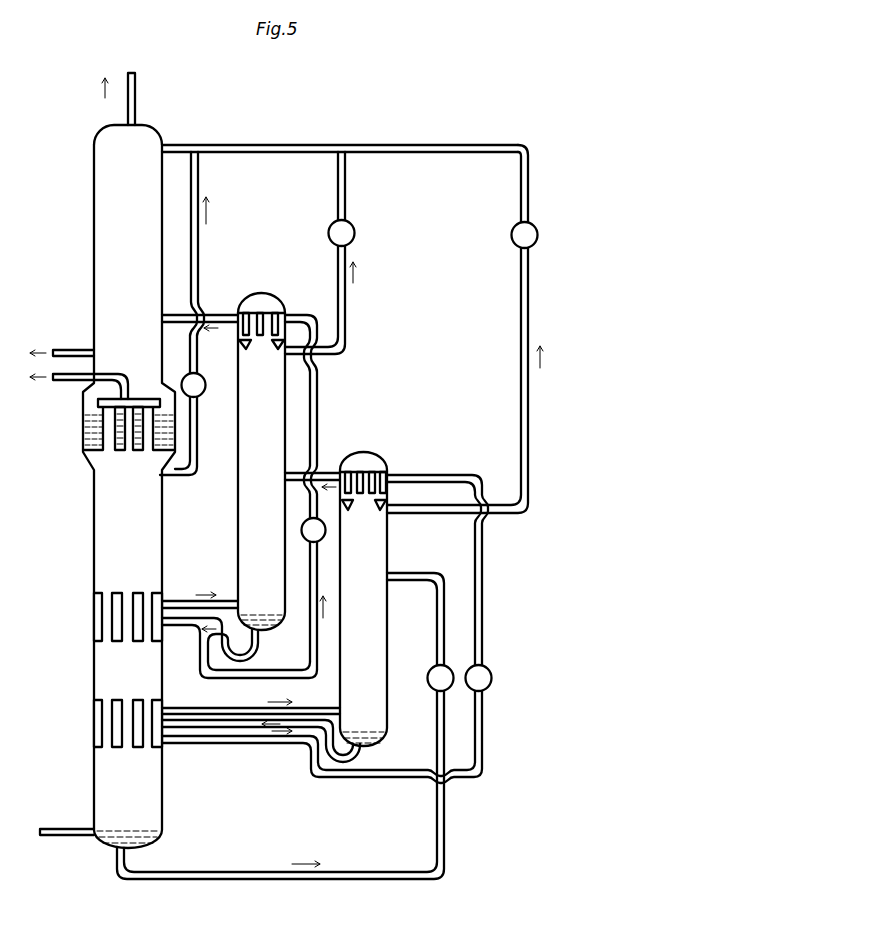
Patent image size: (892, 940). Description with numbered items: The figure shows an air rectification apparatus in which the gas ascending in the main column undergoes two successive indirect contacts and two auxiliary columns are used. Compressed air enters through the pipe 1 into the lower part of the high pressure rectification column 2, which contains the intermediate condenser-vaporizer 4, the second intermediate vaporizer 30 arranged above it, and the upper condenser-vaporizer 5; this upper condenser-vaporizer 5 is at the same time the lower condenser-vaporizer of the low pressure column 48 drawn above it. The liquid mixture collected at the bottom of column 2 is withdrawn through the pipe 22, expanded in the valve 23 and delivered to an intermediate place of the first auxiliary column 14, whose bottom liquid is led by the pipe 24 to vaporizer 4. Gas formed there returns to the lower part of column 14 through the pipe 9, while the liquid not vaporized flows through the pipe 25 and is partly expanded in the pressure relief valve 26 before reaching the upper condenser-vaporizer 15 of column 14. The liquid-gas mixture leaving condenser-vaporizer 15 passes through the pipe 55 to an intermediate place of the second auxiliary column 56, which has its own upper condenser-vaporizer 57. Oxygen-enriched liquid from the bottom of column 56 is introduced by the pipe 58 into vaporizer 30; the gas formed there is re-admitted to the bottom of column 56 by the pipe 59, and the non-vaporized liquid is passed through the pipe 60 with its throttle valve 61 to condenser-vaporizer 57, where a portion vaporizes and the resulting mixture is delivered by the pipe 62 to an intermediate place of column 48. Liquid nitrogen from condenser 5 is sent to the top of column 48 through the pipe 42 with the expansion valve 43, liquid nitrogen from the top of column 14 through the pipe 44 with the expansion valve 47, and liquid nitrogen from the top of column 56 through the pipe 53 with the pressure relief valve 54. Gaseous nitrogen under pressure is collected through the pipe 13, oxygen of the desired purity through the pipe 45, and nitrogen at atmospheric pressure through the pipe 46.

The pipe 1 is at (78, 826).
The rectification column 2 is at (94, 540).
The intermediate condenser-vaporizer 4 is at (94, 722).
The upper condenser-vaporizer 5 is at (90, 432).
The pipe 9 is at (251, 708).
The pipe 13 is at (60, 381).
The rectification column 14 is at (390, 544).
The upper condenser-vaporizer 15 is at (382, 474).
The pipe 22 is at (258, 872).
The valve 23 is at (445, 667).
The pipe 24 is at (176, 720).
The pipe 25 is at (232, 745).
The pressure relief valve 26 is at (491, 673).
The condenser-vaporizer 30 is at (94, 620).
The pipe 42 is at (200, 268).
The expansion valve 43 is at (204, 392).
The pipe 44 is at (530, 420).
The pipe 45 is at (66, 345).
The pipe 46 is at (138, 106).
The expansion valve 47 is at (540, 238).
The low pressure column 48 is at (94, 222).
The pipe 53 is at (347, 303).
The pressure relief valve 54 is at (356, 237).
The pipe 55 is at (323, 472).
The second auxiliary column 56 is at (238, 480).
The upper condenser-vaporizer 57 is at (268, 308).
The pipe 58 is at (262, 652).
The pipe 59 is at (186, 600).
The pipe 60 is at (320, 418).
The throttle valve 61 is at (307, 541).
The pipe 62 is at (205, 315).